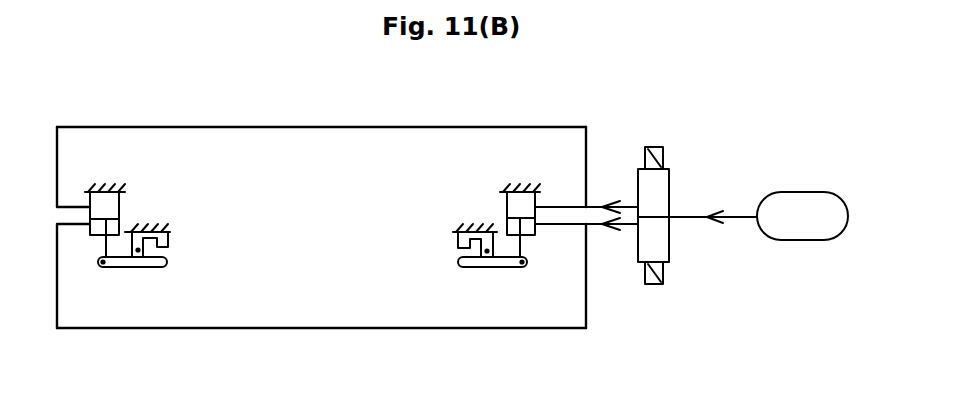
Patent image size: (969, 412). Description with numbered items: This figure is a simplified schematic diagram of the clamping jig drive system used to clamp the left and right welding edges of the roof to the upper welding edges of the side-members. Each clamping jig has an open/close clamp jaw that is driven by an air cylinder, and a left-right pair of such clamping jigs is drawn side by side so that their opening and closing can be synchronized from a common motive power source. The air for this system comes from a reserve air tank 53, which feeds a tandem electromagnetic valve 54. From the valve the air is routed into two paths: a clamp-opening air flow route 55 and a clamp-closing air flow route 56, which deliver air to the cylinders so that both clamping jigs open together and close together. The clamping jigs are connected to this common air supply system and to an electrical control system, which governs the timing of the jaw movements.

The reserve air tank 53 is at (802, 236).
The tandem electromagnetic valve 54 is at (672, 188).
The clamp-opening air flow route 55 is at (540, 127).
The clamp-closing air flow route 56 is at (520, 328).